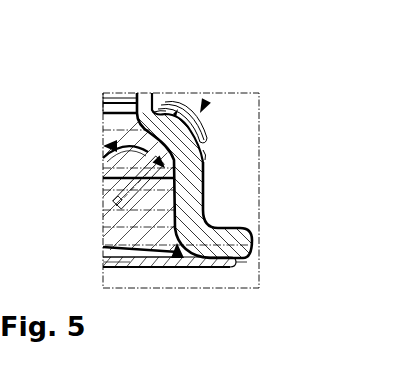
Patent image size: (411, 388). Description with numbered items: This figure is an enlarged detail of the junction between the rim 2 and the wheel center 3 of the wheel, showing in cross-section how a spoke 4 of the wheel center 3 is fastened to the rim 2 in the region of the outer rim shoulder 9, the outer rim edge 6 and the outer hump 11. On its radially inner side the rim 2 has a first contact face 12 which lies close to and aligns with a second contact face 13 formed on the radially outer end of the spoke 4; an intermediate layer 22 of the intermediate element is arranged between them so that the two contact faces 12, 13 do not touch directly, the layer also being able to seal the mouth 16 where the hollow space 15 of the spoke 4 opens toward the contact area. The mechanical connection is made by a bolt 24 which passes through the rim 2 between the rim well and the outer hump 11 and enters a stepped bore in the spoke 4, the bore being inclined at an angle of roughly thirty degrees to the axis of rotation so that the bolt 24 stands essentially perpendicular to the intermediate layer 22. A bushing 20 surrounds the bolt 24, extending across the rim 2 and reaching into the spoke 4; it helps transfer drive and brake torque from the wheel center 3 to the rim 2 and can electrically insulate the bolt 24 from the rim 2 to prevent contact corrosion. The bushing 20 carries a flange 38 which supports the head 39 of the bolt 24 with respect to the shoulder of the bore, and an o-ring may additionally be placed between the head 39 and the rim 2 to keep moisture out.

The rim 2 is at (204, 106).
The wheel center 3 is at (106, 147).
The spoke 4 is at (115, 264).
The outer rim edge 6 is at (236, 260).
The outer rim shoulder 9 is at (207, 193).
The outer hump 11 is at (205, 157).
The first contact face 12 is at (207, 265).
The second contact face 13 is at (167, 207).
The hollow space 15 is at (120, 262).
The mouth 16 is at (177, 258).
The bushing 20 is at (134, 130).
The intermediate layer 22 is at (150, 172).
The bolt 24 is at (197, 126).
The flange 38 is at (154, 112).
The head 39 is at (173, 114).